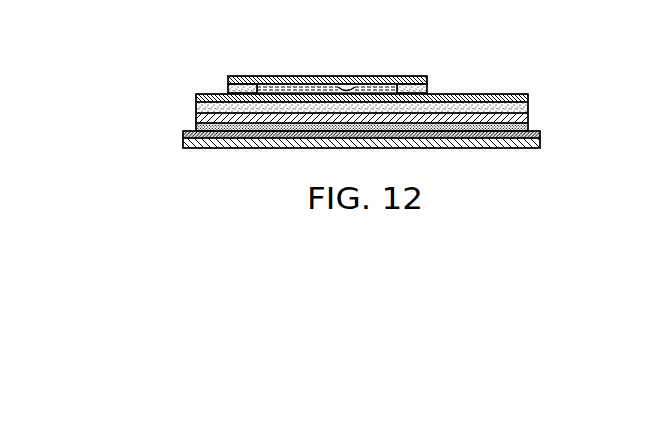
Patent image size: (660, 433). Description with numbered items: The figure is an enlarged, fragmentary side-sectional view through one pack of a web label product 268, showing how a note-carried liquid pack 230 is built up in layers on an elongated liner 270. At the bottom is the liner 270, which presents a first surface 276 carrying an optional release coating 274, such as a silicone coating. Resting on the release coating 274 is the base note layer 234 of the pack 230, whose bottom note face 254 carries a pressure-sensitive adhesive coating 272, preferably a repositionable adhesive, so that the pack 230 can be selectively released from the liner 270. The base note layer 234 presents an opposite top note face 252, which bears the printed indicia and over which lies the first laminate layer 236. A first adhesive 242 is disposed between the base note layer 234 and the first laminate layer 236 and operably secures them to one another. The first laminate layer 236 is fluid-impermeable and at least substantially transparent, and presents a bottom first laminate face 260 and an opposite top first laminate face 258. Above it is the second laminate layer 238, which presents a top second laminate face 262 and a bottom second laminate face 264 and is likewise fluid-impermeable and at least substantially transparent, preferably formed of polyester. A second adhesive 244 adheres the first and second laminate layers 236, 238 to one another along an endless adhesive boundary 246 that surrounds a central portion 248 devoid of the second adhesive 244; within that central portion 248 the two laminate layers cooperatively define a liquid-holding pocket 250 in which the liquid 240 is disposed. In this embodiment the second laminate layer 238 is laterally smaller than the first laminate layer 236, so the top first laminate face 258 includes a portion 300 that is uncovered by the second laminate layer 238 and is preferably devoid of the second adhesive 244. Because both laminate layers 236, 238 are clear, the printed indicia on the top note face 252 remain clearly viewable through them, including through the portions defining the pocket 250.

The note-carried liquid pack 230 is at (543, 64).
The uncovered portion 300 is at (511, 93).
The web label product 268 is at (196, 79).
The liquid 240 is at (302, 90).
The adhesive boundary 246 is at (256, 91).
The liquid-holding pocket 250 is at (260, 89).
The top second laminate face 262 is at (347, 85).
The bottom second laminate face 264 is at (363, 90).
The central portion 248 is at (398, 90).
The second laminate layer 238 is at (428, 86).
The second adhesive 244 is at (428, 93).
The first laminate layer 236 is at (526, 96).
The top first laminate face 258 is at (205, 94).
The first adhesive 242 is at (526, 109).
The bottom first laminate face 260 is at (212, 109).
The base note layer 234 is at (281, 117).
The top note face 252 is at (232, 110).
The bottom note face 254 is at (198, 126).
The pressure-sensitive adhesive coating 272 is at (530, 130).
The release coating 274 is at (540, 137).
The first surface 276 is at (337, 130).
The elongated liner 270 is at (466, 140).